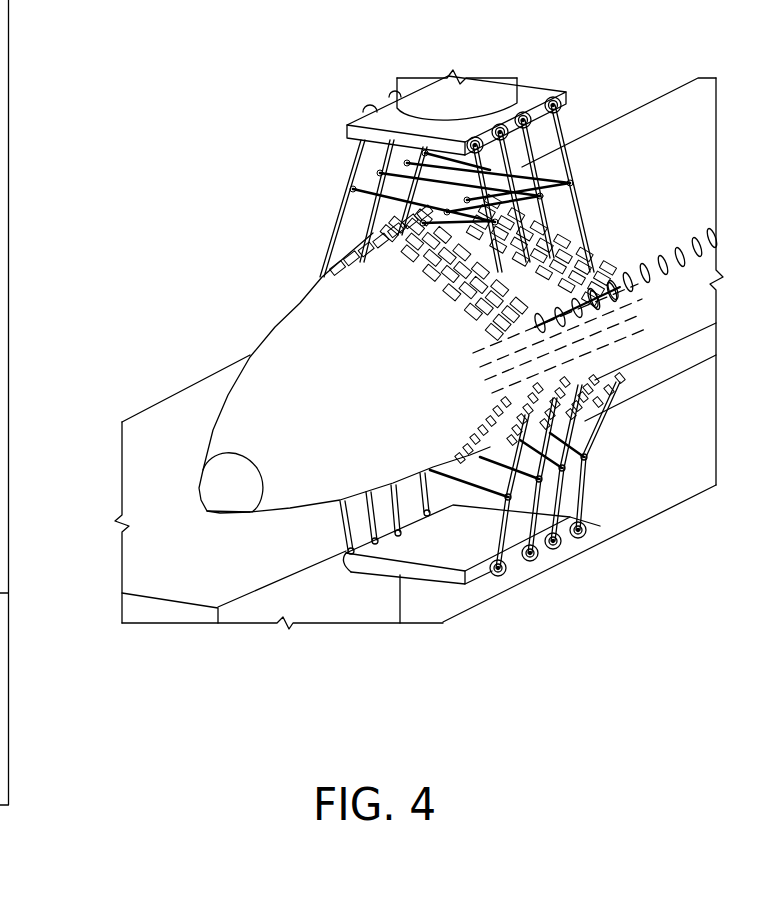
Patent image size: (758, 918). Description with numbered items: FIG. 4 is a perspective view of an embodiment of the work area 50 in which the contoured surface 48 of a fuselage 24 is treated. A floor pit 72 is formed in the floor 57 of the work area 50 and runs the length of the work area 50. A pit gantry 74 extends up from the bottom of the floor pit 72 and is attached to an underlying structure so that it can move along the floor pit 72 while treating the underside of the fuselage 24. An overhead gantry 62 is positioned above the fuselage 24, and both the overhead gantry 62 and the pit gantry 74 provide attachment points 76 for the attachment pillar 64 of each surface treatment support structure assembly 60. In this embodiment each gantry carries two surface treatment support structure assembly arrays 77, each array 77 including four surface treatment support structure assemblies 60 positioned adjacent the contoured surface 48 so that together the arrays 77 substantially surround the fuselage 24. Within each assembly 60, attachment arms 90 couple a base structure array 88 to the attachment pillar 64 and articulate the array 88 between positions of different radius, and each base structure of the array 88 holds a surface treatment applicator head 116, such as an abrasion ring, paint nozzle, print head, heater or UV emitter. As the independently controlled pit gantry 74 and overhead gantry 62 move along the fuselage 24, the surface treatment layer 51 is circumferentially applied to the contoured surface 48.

The fuselage 24 is at (307, 308).
The contoured surface 48 is at (252, 327).
The work area 50 is at (160, 532).
The surface treatment layer 51 is at (537, 337).
The floor 57 is at (212, 580).
The surface treatment support structure assembly 60 is at (587, 213).
The overhead gantry 62 is at (503, 92).
The attachment pillar 64 is at (565, 138).
The floor pit 72 is at (333, 592).
The pit gantry 74 is at (432, 613).
The attachment point 76 is at (558, 100).
The surface treatment support structure assembly array 77 is at (597, 277).
The base structure array 88 is at (402, 262).
The attachment arm 90 is at (343, 227).
The surface treatment applicator head 116 is at (442, 288).